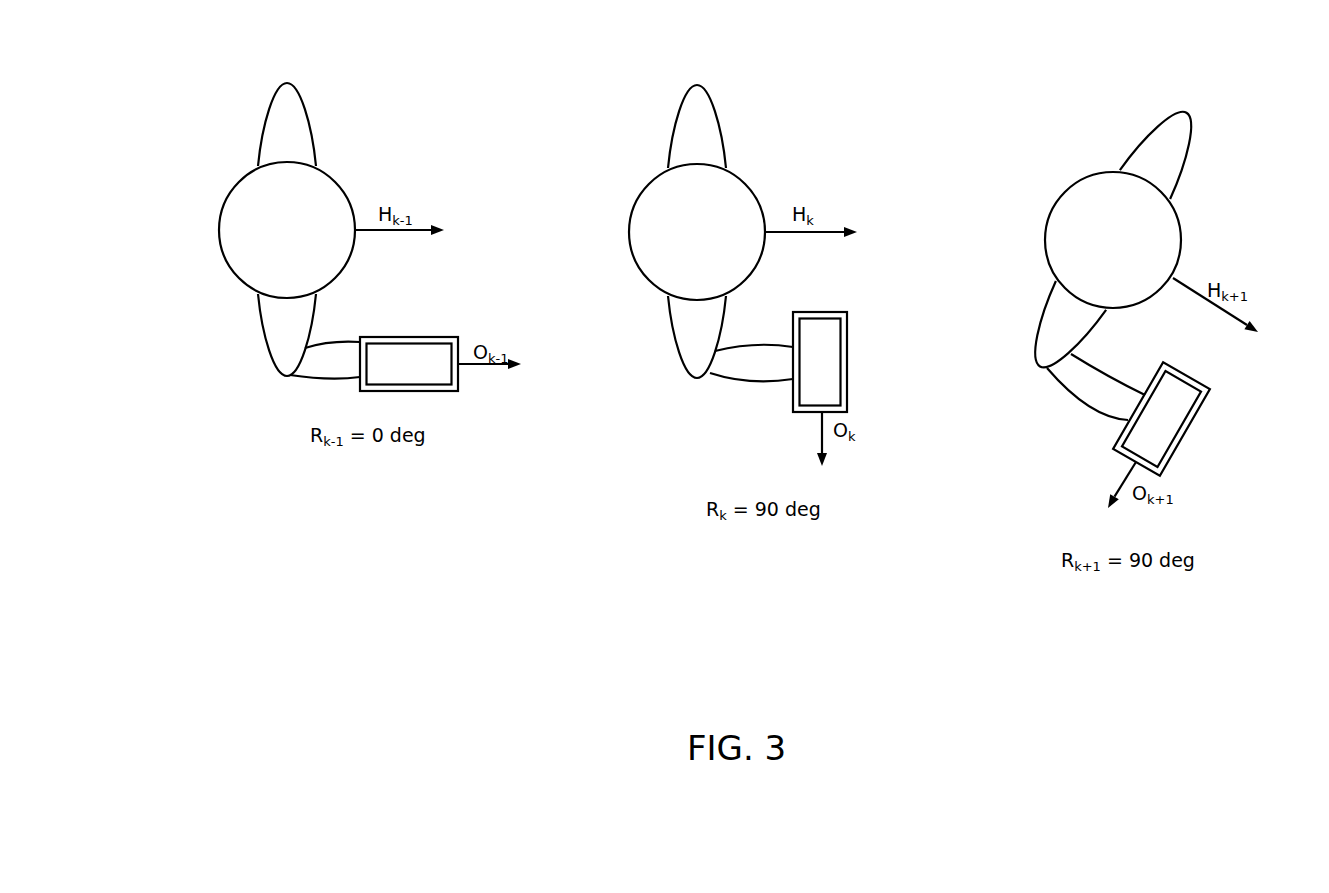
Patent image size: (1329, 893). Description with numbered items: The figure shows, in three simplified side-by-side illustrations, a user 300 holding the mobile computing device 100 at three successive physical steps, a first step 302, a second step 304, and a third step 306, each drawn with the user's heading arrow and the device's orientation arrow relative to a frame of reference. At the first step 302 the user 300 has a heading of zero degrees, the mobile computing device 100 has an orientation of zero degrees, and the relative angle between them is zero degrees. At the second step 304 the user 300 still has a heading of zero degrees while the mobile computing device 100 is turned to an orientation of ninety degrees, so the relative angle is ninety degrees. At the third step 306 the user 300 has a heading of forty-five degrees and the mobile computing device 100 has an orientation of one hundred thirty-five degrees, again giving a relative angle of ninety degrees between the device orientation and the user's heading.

The mobile computing device 100 is at (383, 335).
The user 300 is at (218, 207).
The first step 302 is at (293, 85).
The second step 304 is at (704, 86).
The third step 306 is at (1187, 114).